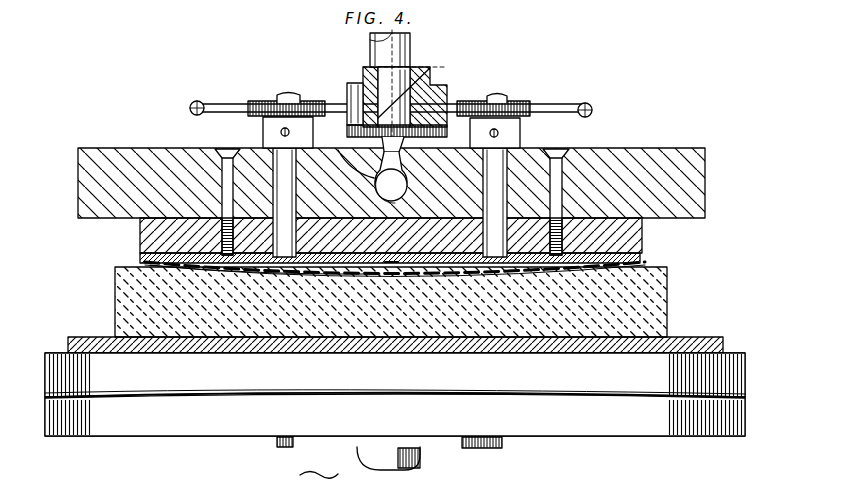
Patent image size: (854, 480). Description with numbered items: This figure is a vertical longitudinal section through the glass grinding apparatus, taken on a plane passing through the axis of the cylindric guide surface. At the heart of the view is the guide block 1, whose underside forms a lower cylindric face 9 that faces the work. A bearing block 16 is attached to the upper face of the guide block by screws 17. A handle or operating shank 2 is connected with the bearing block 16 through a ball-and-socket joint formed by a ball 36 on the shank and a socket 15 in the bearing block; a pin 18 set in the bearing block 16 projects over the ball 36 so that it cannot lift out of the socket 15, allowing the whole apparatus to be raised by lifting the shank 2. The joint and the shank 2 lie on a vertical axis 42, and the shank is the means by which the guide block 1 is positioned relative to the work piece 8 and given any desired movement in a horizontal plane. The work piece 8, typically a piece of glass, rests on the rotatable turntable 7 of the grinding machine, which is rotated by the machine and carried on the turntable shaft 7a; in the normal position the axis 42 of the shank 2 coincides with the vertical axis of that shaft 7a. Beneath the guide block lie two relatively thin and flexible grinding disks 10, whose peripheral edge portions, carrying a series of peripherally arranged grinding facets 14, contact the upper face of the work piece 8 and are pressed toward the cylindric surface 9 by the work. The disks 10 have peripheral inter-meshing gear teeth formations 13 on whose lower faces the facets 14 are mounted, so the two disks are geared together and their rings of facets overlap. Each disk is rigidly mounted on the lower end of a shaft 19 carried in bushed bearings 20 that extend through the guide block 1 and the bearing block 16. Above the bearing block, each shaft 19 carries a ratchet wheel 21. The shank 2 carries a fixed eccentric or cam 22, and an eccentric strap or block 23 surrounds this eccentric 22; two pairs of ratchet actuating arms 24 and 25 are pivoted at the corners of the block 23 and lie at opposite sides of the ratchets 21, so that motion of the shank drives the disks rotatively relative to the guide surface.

The guide block 1 is at (140, 236).
The handle or operating shank 2 is at (400, 60).
The rotatable turntable 7 is at (705, 436).
The turntable shaft 7a is at (432, 462).
The work piece 8 is at (668, 302).
The lower cylindric face 9 is at (150, 256).
The grinding disks 10 is at (160, 265).
The inter-meshing gear teeth formations 13 is at (392, 258).
The grinding facets 14 is at (250, 270).
The socket 15 is at (391, 177).
The bearing block 16 is at (705, 182).
The screws 17 is at (222, 150).
The pin 18 is at (410, 150).
The shaft 19 is at (288, 176).
The bushed bearings 20 is at (270, 142).
The ratchet wheels 21 is at (306, 104).
The eccentric or cam 22 is at (428, 80).
The eccentric strap or block 23 is at (350, 90).
The ratchet actuating arms 24 is at (218, 104).
The ratchet actuating arms 25 is at (560, 108).
The spring arm 36 is at (342, 150).
The spindle cap 42 is at (375, 48).